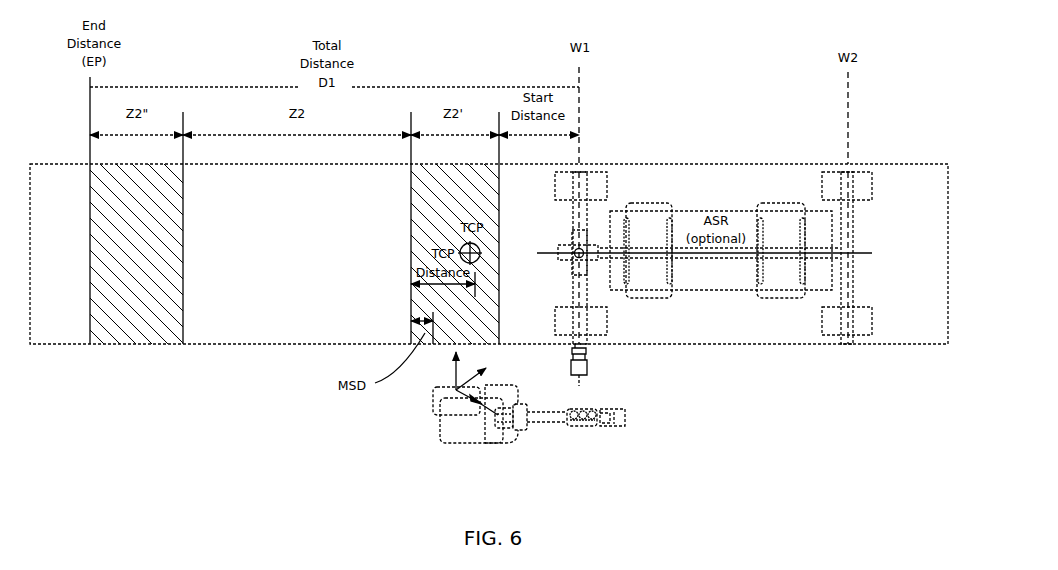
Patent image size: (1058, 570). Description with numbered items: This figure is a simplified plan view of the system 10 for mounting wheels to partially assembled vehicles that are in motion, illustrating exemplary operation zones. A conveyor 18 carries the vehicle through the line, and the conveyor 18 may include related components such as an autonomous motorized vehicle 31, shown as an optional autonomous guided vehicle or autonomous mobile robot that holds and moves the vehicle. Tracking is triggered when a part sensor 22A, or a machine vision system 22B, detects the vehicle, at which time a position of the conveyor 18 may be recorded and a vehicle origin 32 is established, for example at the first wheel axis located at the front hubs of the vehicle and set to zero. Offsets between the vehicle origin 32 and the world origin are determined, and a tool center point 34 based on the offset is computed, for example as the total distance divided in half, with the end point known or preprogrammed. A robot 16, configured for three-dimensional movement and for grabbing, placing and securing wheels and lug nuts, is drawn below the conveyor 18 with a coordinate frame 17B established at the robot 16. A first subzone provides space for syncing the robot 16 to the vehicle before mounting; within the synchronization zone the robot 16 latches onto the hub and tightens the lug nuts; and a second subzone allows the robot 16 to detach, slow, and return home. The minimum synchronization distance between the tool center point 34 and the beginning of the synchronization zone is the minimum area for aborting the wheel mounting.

The system 10 is at (886, 66).
The conveyor 18 is at (655, 172).
The autonomous motorized vehicle 31 is at (721, 210).
The vehicle origin 32 is at (583, 257).
The TCP 34 is at (478, 261).
The part sensor 22A is at (586, 372).
The machine vision system 22B is at (578, 428).
The coordinate frame 17B is at (445, 417).
The robot 16 is at (465, 447).